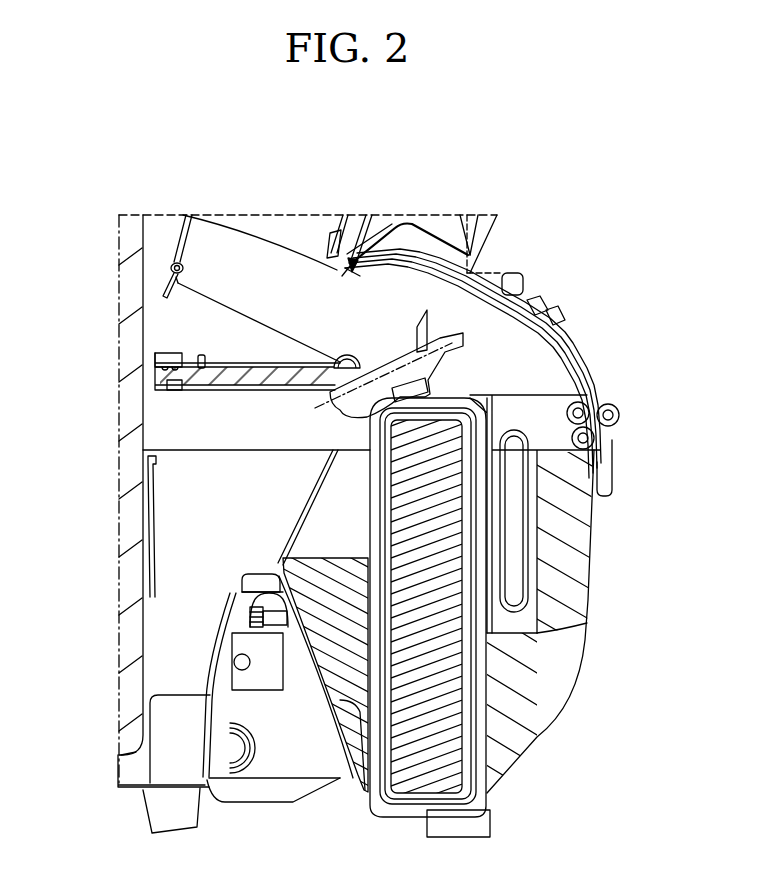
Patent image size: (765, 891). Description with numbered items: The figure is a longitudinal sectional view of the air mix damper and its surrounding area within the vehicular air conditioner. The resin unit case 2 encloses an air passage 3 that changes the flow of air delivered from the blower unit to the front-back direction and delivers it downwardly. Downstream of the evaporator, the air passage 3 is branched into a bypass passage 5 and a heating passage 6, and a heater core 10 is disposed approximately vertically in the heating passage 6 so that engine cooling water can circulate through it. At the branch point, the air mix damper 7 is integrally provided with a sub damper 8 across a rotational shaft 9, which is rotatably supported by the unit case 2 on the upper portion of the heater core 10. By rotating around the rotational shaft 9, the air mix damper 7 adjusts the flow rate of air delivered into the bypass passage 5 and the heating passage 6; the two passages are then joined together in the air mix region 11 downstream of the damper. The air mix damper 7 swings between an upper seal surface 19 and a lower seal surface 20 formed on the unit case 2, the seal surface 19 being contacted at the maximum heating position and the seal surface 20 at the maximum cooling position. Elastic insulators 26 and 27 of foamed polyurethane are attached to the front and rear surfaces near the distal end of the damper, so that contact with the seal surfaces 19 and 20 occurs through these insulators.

The unit case 2 is at (125, 790).
The air passage 3 is at (178, 510).
The bypass passage 5 is at (223, 440).
The heating passage 6 is at (349, 535).
The air mix damper 7 is at (282, 390).
The sub damper 8 is at (384, 357).
The rotational shaft 9 is at (347, 354).
The heater core 10 is at (408, 767).
The air mix region 11 is at (272, 298).
The upper seal surface 19 is at (168, 297).
The lower seal surface 20 is at (245, 575).
The elastic insulator 26 is at (157, 357).
The elastic insulator 27 is at (167, 385).